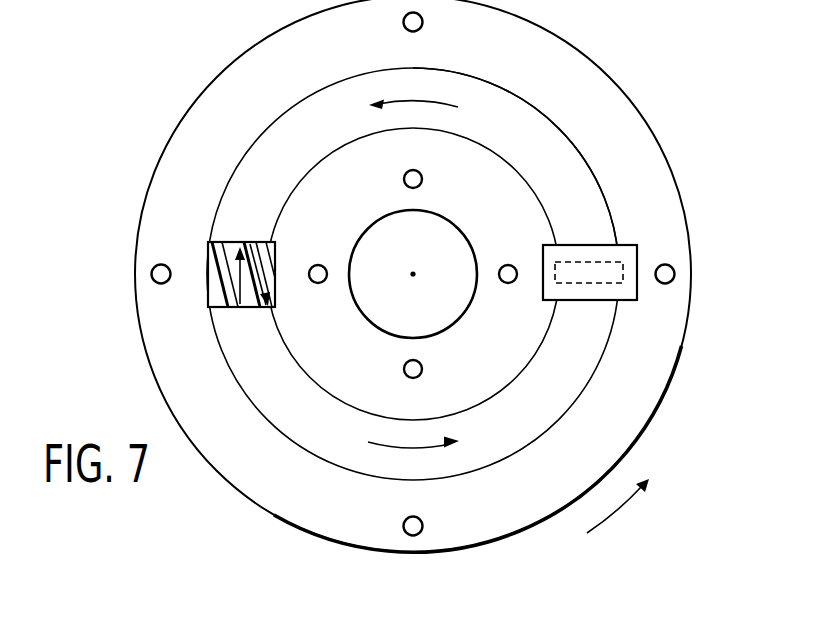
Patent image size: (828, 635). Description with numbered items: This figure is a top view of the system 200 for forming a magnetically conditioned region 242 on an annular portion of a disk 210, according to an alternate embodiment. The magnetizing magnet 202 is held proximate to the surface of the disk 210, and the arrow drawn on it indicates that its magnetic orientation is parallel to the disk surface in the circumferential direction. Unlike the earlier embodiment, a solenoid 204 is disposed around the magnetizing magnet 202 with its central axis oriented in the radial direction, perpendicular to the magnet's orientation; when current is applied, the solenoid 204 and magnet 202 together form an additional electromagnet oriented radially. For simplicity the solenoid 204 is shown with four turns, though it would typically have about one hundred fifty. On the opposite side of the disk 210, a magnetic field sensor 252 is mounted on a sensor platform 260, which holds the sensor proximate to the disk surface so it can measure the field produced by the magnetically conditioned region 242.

The system 200 is at (134, 107).
The disk 210 is at (624, 105).
The magnetically conditioned region 242 is at (572, 186).
The magnetizing magnet 202 is at (208, 295).
The solenoid 204 is at (264, 263).
The magnetic field sensor 252 is at (554, 262).
The sensor platform 260 is at (627, 300).